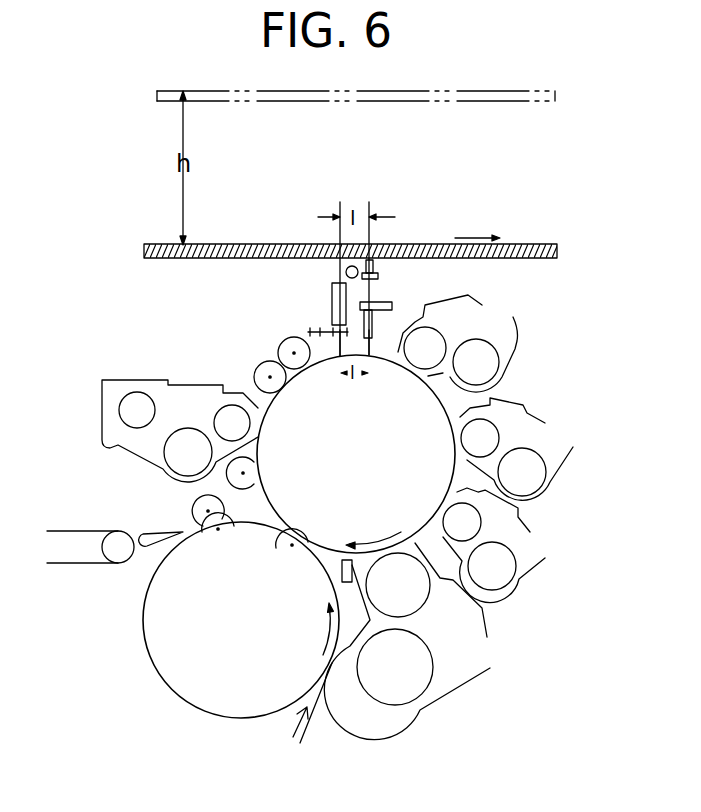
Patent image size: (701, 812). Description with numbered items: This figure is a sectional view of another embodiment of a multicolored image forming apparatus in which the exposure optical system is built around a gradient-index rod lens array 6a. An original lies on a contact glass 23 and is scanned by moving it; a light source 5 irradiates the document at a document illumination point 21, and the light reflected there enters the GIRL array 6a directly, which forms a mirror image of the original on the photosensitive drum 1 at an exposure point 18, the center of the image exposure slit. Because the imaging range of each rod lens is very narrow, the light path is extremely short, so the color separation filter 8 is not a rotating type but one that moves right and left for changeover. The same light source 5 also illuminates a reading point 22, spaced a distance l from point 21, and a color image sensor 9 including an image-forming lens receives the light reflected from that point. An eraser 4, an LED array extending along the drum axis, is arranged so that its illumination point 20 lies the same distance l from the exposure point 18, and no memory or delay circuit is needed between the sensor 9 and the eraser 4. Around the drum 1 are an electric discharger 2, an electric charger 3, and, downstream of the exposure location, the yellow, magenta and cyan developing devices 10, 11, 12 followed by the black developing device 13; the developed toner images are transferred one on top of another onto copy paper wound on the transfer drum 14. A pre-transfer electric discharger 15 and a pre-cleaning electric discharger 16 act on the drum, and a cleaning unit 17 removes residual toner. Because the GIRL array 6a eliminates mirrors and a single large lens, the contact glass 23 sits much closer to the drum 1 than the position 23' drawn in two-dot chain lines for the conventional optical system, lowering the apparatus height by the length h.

The photosensitive drum 1 is at (370, 450).
The electric discharger 2 is at (262, 370).
The electric charger 3 is at (290, 344).
The eraser 4 is at (393, 303).
The light source 5 is at (347, 303).
The gradient-index rod lens (GIRL) array 6a is at (342, 290).
The color separation filter 8 is at (318, 326).
The color image sensor 9 is at (379, 278).
The yellow developing device 10 is at (516, 350).
The magenta developing device 11 is at (560, 472).
The cyan developing device 12 is at (533, 567).
The black developing device 13 is at (460, 684).
The transfer drum 14 is at (276, 638).
The pre-transfer electric discharger 15 is at (346, 584).
The pre-cleaning electric discharger 16 is at (228, 478).
The cleaning unit 17 is at (148, 446).
The exposure point 18 is at (338, 366).
The illumination point 20 is at (372, 366).
The document illumination point 21 is at (341, 246).
The reading point 22 is at (372, 246).
The contact glass 23 is at (356, 236).
The contact glass position of conventional optical system 23' is at (361, 79).